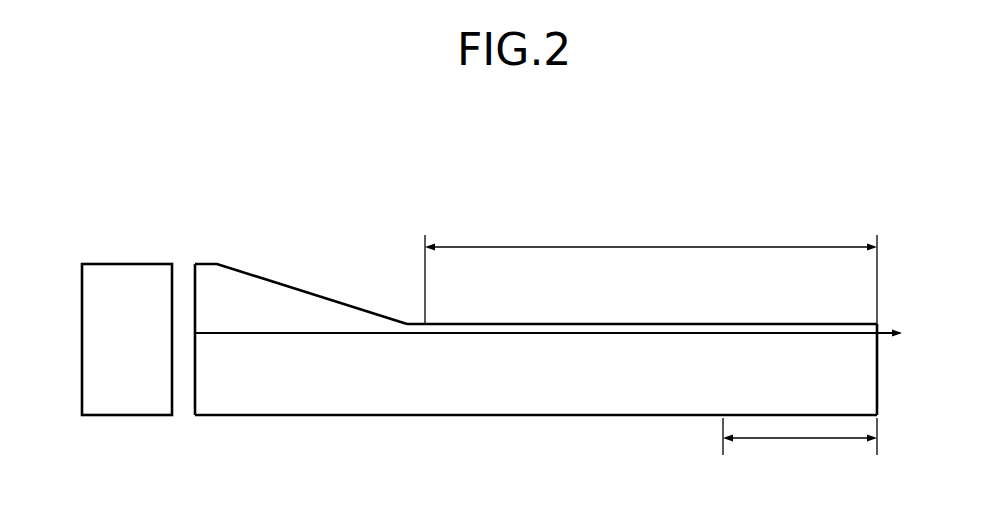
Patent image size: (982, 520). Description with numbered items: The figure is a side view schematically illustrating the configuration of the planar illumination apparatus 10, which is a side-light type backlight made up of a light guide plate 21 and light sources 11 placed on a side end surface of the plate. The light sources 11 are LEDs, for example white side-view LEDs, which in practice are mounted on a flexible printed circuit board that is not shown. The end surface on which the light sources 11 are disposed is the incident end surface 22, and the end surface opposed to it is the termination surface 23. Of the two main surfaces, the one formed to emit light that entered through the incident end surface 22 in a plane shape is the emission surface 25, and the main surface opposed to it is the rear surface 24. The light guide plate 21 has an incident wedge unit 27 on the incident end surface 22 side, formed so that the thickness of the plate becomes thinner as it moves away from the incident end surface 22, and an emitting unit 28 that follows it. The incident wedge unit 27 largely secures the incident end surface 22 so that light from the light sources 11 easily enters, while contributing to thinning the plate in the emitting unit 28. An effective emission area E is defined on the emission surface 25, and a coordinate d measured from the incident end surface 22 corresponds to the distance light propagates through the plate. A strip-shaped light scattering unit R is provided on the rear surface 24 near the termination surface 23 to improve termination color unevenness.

The planar illumination apparatus 10 is at (246, 116).
The light source 11 is at (133, 393).
The light guide plate 21 is at (393, 288).
The incident end surface 22 is at (195, 387).
The termination surface 23 is at (878, 372).
The rear surface 24 is at (670, 416).
The emission surface 25 is at (650, 323).
The incident wedge unit 27 is at (324, 388).
The emitting unit 28 is at (489, 393).